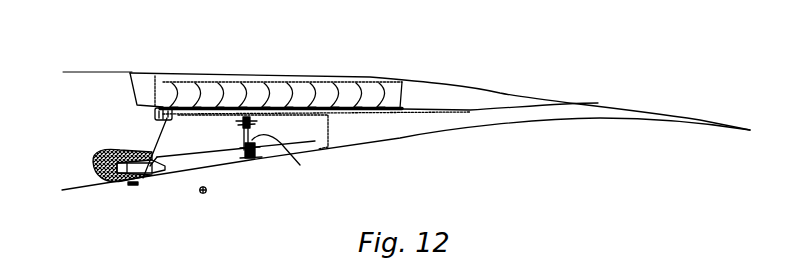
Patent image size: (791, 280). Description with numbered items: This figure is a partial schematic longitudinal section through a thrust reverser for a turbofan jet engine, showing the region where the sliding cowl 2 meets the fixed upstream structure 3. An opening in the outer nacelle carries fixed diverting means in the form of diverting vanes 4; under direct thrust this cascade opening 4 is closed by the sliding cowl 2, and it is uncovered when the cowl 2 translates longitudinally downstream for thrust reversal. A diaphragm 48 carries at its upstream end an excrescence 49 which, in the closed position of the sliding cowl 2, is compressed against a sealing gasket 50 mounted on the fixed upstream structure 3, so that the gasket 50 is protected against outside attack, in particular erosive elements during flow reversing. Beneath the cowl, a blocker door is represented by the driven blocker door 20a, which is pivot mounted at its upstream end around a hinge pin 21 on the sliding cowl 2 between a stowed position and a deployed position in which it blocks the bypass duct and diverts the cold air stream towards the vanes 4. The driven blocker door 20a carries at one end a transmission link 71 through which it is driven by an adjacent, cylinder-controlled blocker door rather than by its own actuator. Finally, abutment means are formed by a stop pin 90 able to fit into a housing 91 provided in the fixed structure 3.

The sliding cowl 2 is at (608, 118).
The fixed upstream structure 3 is at (86, 78).
The diverting vanes 4 is at (358, 102).
The diaphragm 48 is at (243, 116).
The excrescence 49 is at (178, 104).
The sealing gasket 50 is at (160, 107).
The transmission link 71 is at (300, 165).
The driven blocker door 20a is at (212, 160).
The hinge pin 21 is at (205, 195).
The stop pin 90 is at (148, 178).
The housing 91 is at (117, 184).